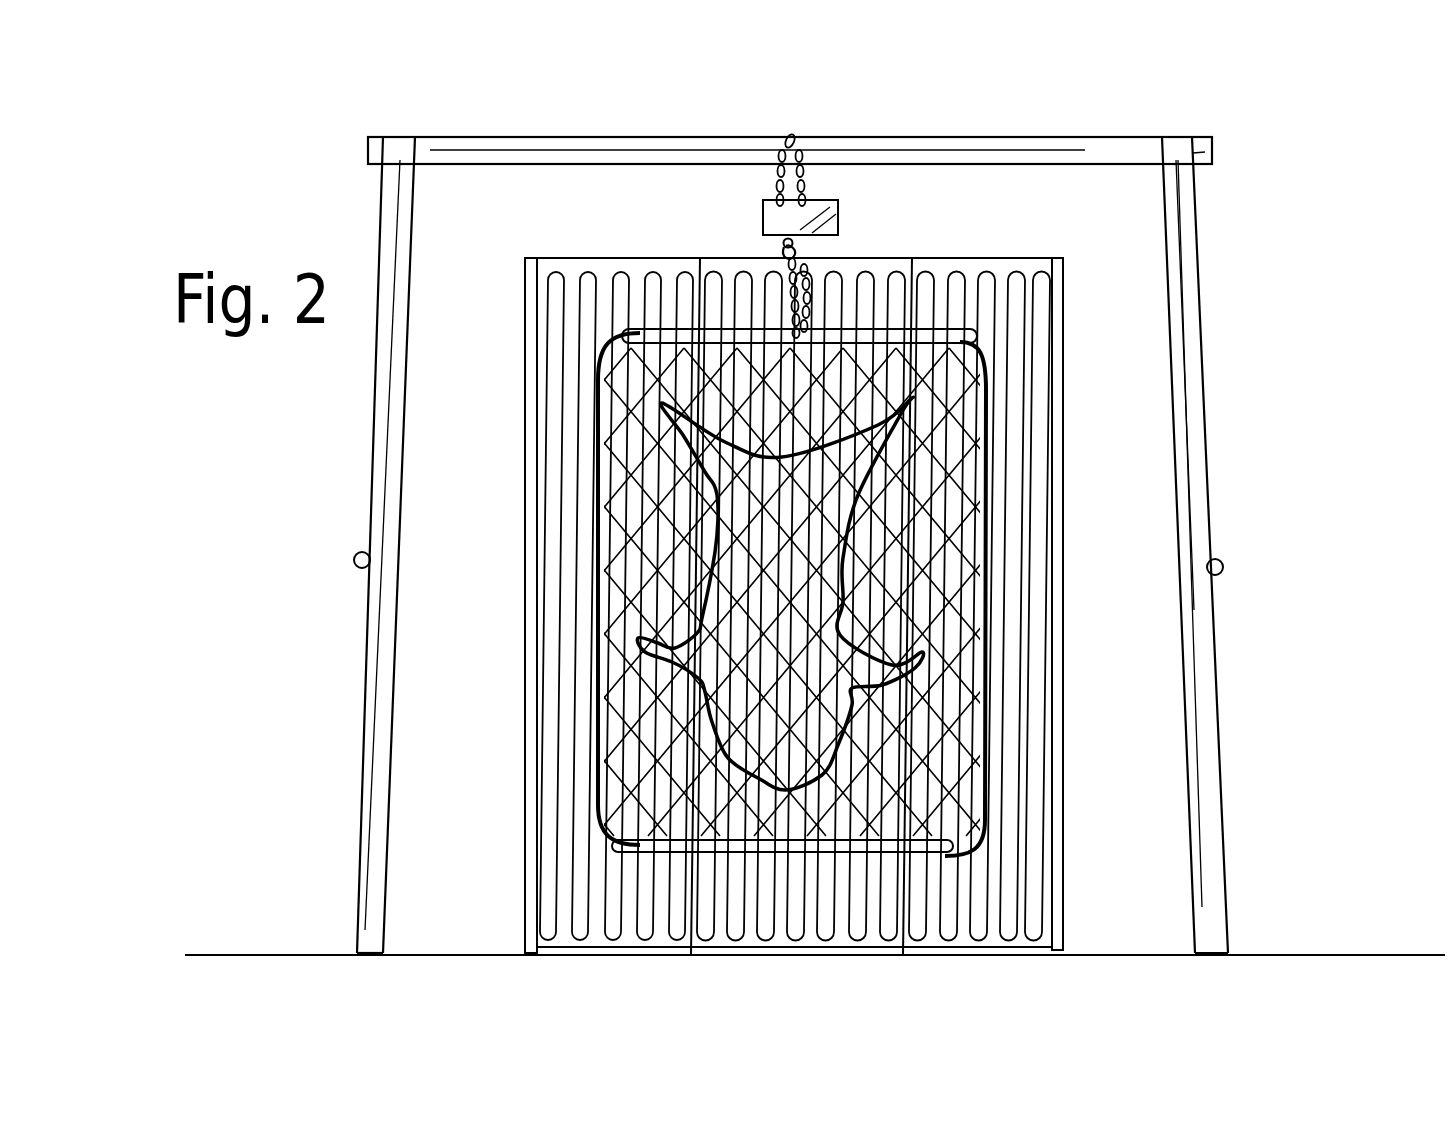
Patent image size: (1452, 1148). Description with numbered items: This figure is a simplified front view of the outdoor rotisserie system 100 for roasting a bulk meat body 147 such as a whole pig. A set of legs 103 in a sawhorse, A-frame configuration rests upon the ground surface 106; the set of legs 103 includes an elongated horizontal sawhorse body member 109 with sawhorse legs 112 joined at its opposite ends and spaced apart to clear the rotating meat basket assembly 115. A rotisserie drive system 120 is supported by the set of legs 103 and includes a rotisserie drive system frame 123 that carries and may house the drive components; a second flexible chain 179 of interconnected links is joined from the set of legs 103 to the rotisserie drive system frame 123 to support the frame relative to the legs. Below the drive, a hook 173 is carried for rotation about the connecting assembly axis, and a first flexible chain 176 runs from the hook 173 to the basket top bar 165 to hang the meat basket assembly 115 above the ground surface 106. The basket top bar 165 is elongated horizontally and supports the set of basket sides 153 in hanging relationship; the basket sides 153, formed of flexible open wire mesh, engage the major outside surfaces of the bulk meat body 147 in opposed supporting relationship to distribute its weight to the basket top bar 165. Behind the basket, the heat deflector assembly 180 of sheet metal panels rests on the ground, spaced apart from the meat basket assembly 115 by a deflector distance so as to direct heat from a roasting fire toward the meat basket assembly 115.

The outdoor rotisserie system 100 is at (183, 488).
The set of legs 103 is at (853, 495).
The ground surface 106 is at (1346, 946).
The sawhorse body member 109 is at (1130, 153).
The sawhorse legs 112 is at (1210, 785).
The meat basket assembly 115 is at (1006, 475).
The rotisserie drive system 120 is at (802, 185).
The rotisserie drive system frame 123 is at (800, 217).
The bulk meat body 147 is at (748, 525).
The set of basket sides 153 is at (583, 419).
The basket top bar 165 is at (645, 334).
The hook 173 is at (762, 246).
The first flexible chain 176 is at (816, 290).
The second flexible chain 179 is at (778, 150).
The heat deflector assembly 180 is at (1057, 320).